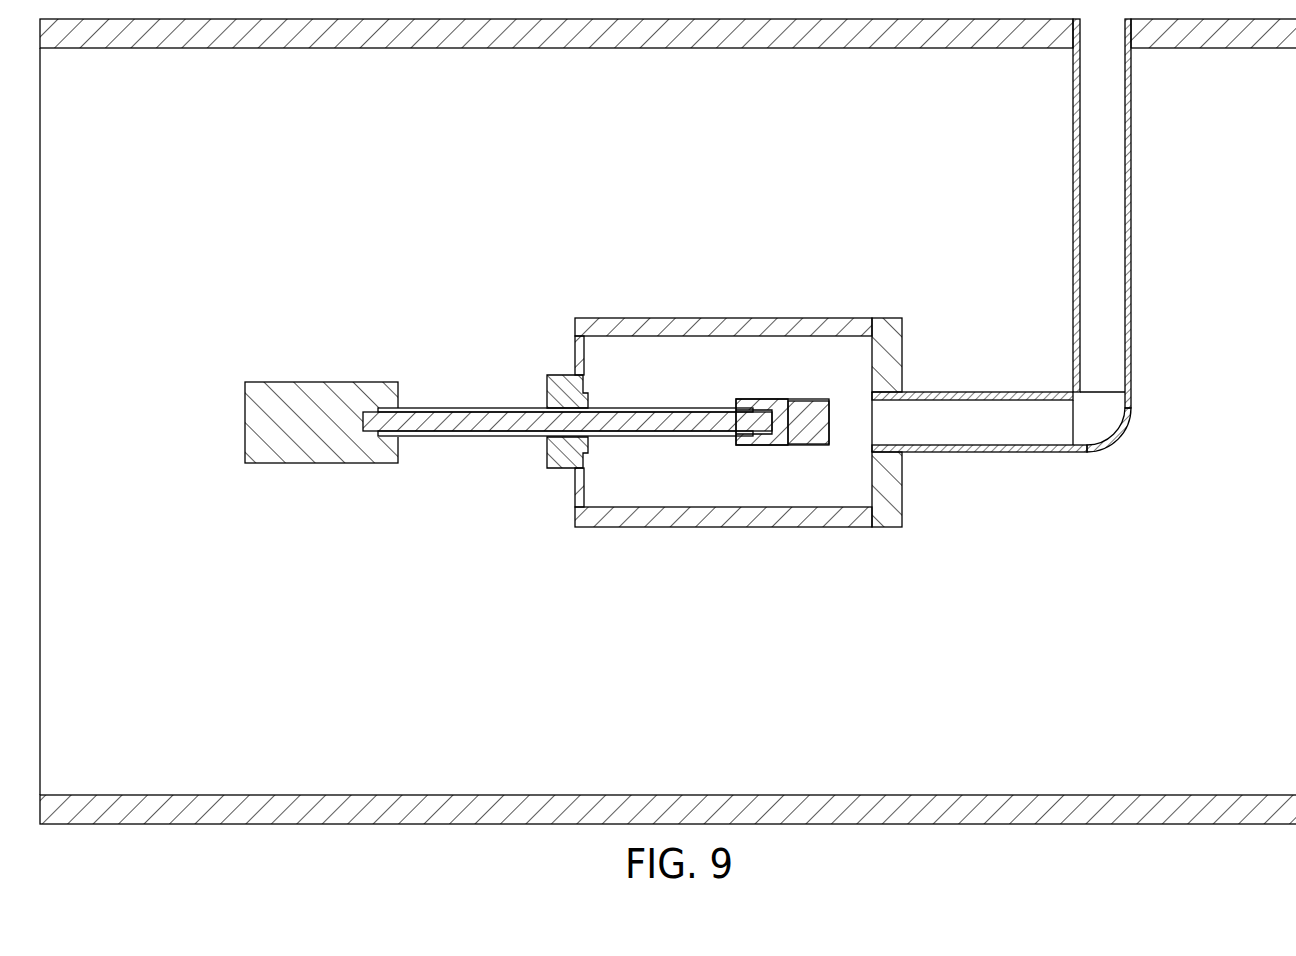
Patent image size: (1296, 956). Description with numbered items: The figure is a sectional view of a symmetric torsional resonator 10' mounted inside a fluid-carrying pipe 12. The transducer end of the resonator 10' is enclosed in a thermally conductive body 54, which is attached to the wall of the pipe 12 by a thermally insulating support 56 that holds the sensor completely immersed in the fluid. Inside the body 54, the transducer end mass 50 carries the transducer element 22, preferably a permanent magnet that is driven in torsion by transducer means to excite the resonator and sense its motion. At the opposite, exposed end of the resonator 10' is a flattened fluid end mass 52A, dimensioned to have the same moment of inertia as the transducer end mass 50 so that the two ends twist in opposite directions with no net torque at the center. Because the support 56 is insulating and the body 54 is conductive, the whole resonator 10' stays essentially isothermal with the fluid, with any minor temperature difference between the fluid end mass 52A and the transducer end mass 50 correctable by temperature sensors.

The pipe 12 is at (636, 48).
The balanced resonator 10' is at (468, 256).
The fluid end mass 52A is at (325, 382).
The transducer element 22 is at (817, 437).
The thermally conductive body 54 is at (828, 318).
The transducer end mass 50 is at (812, 399).
The thermally insulating support 56 is at (1107, 440).